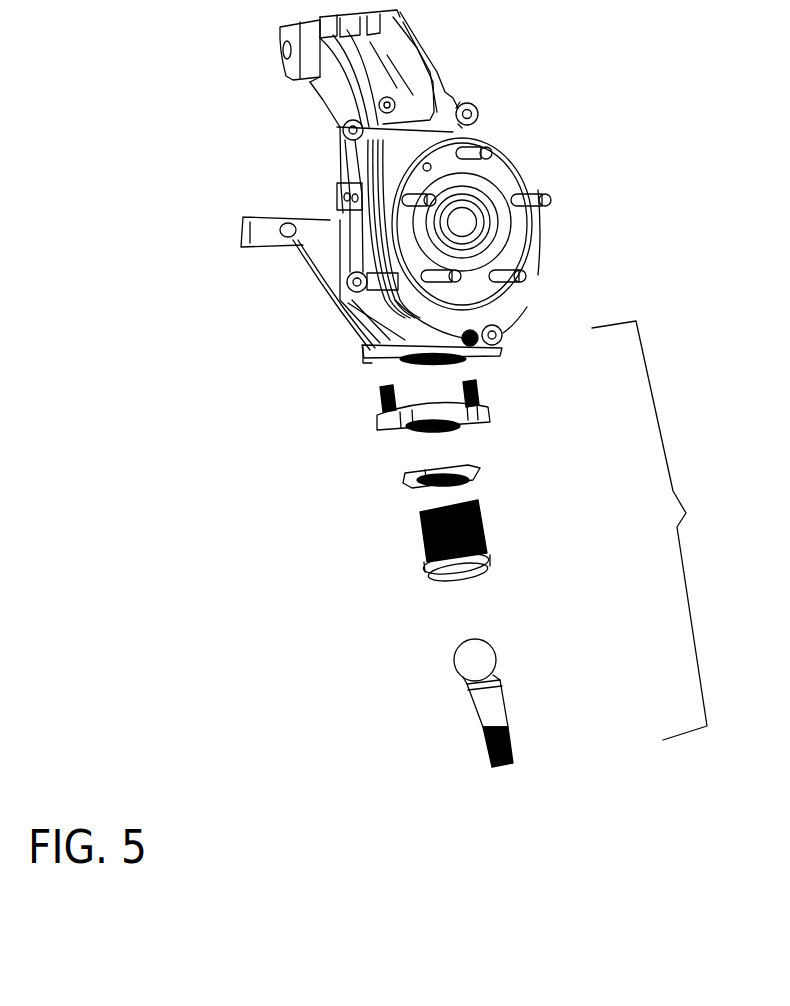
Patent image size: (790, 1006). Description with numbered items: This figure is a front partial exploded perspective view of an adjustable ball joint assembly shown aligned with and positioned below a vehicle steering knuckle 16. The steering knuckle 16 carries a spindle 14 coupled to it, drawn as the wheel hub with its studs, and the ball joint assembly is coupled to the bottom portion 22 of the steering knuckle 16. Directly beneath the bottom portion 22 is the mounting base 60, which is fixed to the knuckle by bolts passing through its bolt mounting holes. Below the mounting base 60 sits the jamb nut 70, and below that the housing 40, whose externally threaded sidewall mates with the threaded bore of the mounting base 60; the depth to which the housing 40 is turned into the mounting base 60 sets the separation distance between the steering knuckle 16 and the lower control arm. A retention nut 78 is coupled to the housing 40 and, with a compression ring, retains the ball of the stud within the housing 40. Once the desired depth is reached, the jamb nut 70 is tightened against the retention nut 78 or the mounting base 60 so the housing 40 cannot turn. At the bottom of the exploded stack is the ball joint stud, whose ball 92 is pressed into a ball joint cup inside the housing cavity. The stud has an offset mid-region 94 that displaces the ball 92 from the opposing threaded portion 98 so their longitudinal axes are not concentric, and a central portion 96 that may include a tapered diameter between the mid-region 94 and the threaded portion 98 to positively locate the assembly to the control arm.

The spindle 14 is at (523, 231).
The steering knuckle 16 is at (333, 253).
The bottom portion of steering knuckle 22 is at (373, 353).
The housing 40 is at (420, 532).
The mounting base 60 is at (490, 418).
The jamb nut 70 is at (473, 472).
The retention nut 78 is at (490, 560).
The ball 92 is at (470, 658).
The mid-region of the stud 94 is at (497, 683).
The central portion of the stud 96 is at (473, 712).
The threaded portion 98 is at (510, 763).